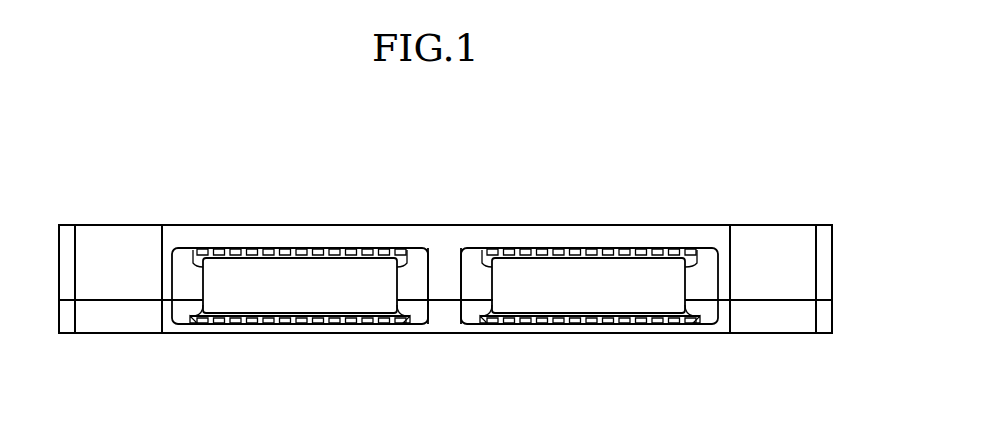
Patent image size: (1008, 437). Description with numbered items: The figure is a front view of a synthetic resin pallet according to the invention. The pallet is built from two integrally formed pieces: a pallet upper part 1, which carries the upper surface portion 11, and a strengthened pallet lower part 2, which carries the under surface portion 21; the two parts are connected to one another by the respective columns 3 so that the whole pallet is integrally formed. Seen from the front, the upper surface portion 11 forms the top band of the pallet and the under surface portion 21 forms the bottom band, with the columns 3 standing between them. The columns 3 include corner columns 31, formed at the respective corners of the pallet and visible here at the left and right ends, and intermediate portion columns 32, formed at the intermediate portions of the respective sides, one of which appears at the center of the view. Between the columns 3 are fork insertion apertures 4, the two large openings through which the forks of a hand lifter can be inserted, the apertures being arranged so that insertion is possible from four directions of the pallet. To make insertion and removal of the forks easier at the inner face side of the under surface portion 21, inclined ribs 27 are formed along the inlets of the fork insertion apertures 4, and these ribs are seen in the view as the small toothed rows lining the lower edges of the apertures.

The pallet upper part 1 is at (833, 224).
The strengthened pallet lower part 2 is at (833, 333).
The columns 3 is at (445, 286).
The fork insertion apertures 4 is at (285, 298).
The upper surface portion 11 is at (282, 238).
The under surface portion 21 is at (615, 325).
The inclined ribs 27 is at (592, 322).
The corner columns 31 is at (797, 266).
The intermediate portion columns 32 is at (447, 280).